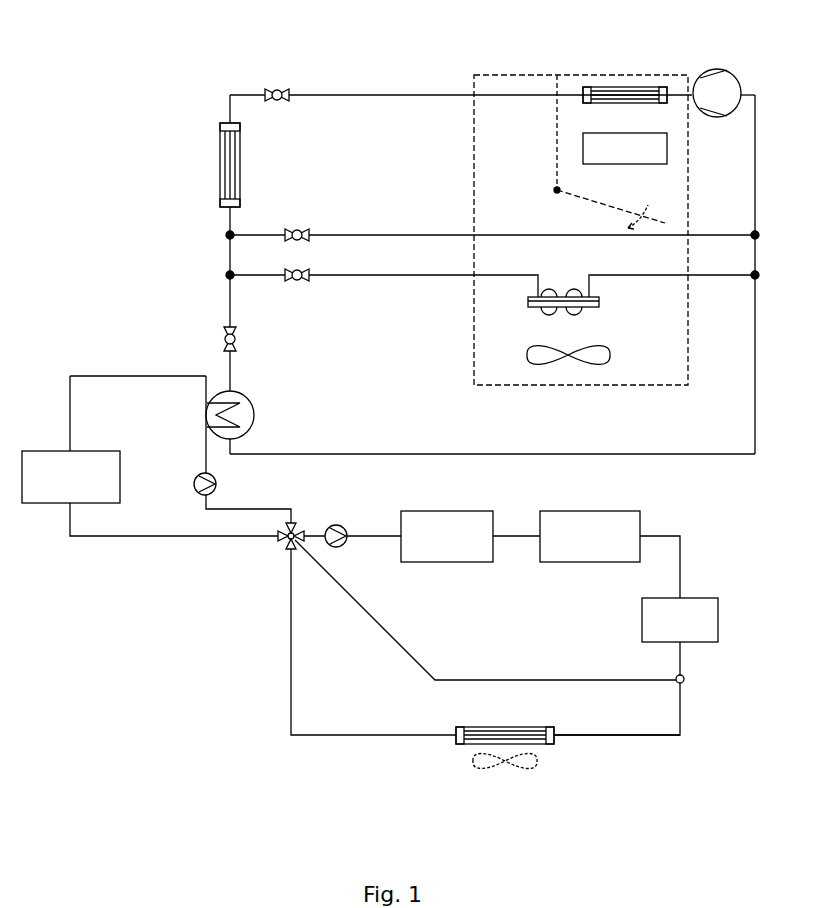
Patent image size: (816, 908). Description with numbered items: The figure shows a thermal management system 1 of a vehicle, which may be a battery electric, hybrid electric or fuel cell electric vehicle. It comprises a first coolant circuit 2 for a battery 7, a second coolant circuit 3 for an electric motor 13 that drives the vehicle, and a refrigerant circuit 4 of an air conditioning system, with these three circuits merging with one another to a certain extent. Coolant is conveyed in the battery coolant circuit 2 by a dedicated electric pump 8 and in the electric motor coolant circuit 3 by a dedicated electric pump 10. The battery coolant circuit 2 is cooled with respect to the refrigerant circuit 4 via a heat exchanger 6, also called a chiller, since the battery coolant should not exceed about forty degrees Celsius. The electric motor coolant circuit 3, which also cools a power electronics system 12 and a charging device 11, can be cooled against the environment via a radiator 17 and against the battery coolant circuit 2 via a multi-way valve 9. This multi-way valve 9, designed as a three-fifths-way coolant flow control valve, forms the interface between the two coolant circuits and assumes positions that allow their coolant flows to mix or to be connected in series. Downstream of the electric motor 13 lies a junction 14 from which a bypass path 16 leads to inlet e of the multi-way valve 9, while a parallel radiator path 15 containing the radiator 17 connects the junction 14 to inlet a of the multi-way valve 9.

The thermal management system 1 is at (148, 137).
The first coolant circuit 2 is at (150, 580).
The second coolant circuit 3 is at (705, 530).
The refrigerant circuit 4 is at (337, 63).
The heat exchanger 6 is at (252, 397).
The battery 7 is at (68, 467).
The electric pump 8 is at (217, 484).
The multi-way valve 9 is at (272, 548).
The electric pump 10 is at (335, 531).
The charging device 11 is at (435, 532).
The power electronics system 12 is at (576, 532).
The electric motor 13 is at (680, 610).
The junction 14 is at (688, 682).
The radiator path 15 is at (622, 735).
The bypass path 16 is at (440, 678).
The radiator 17 is at (483, 737).